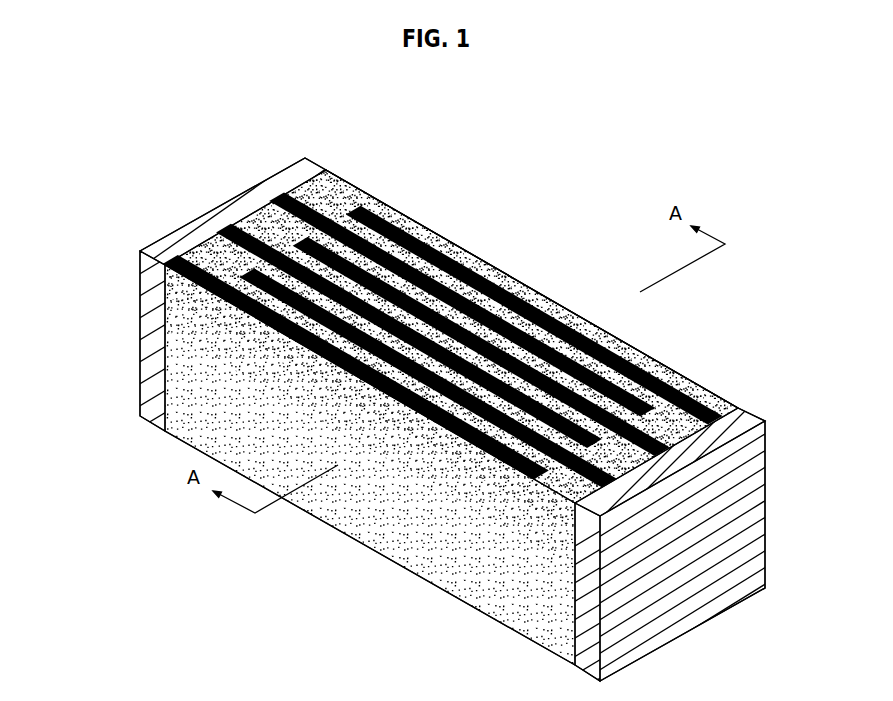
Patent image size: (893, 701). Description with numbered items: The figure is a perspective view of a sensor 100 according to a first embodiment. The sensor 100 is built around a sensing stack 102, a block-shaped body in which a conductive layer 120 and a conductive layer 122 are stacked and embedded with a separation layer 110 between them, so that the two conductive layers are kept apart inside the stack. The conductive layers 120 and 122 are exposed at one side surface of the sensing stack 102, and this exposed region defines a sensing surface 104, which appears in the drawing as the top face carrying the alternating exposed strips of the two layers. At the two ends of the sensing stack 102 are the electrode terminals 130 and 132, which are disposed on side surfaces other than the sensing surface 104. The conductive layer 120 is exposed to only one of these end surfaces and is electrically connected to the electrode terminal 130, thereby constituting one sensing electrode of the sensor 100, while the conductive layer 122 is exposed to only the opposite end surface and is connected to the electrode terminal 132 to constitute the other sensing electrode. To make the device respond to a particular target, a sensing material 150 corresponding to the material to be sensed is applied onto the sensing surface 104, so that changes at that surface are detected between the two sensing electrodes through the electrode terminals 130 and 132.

The sensor 100 is at (123, 87).
The sensing stack 102 is at (297, 519).
The sensing surface 104 is at (487, 218).
The separation layer 110 is at (428, 228).
The conductive layer 120 is at (315, 203).
The conductive layer 122 is at (680, 366).
The electrode terminal 130 is at (132, 345).
The electrode terminal 132 is at (745, 524).
The sensing material 150 is at (503, 281).